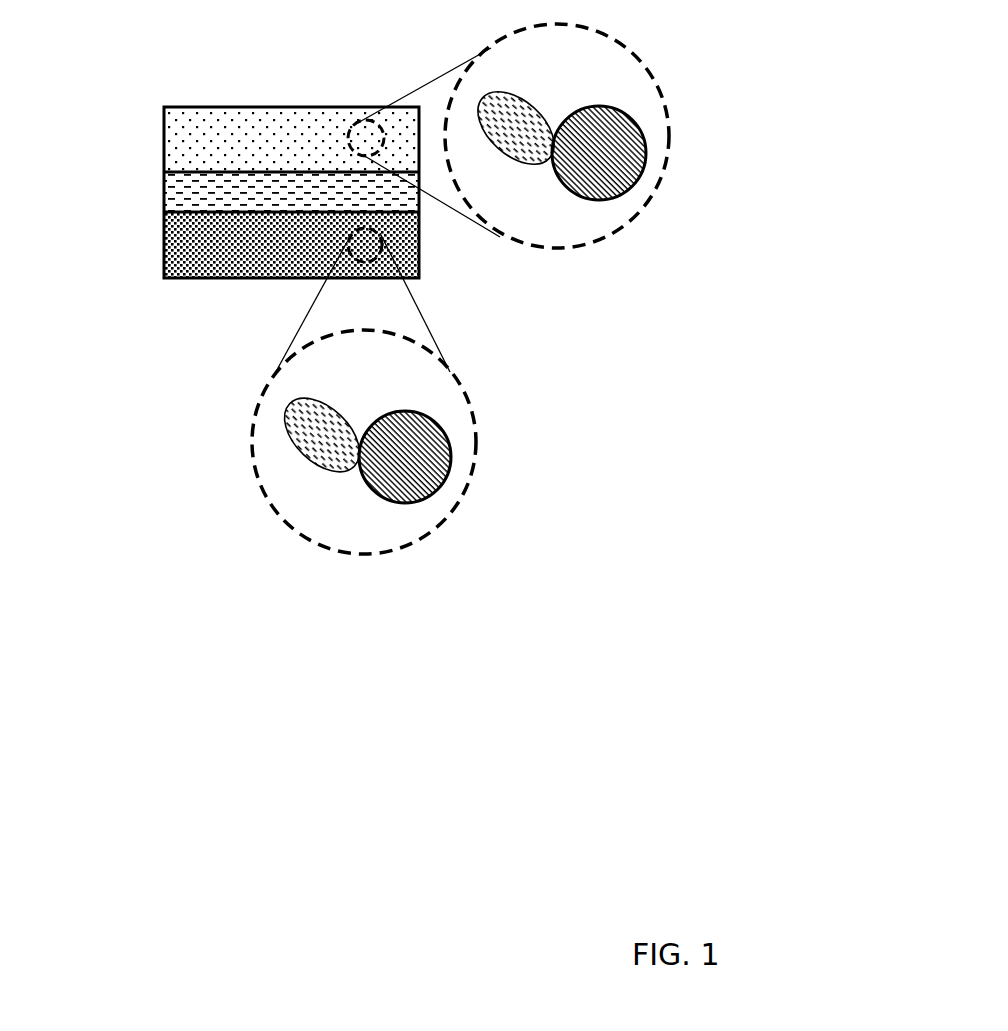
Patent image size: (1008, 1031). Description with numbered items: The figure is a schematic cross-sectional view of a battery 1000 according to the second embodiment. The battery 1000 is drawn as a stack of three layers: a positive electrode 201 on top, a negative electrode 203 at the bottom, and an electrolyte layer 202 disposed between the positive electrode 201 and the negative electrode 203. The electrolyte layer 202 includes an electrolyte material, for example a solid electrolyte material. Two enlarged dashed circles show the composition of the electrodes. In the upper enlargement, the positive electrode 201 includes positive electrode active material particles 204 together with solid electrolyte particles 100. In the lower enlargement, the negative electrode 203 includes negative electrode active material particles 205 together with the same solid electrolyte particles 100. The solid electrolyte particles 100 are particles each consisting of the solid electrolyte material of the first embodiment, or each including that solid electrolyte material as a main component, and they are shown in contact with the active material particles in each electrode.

The battery 1000 is at (236, 158).
The positive electrode 201 is at (197, 127).
The electrolyte layer 202 is at (197, 190).
The negative electrode 203 is at (197, 245).
The positive electrode active material particles 204 is at (612, 153).
The negative electrode active material particles 205 is at (417, 453).
The solid electrolyte particles 100 is at (530, 147).